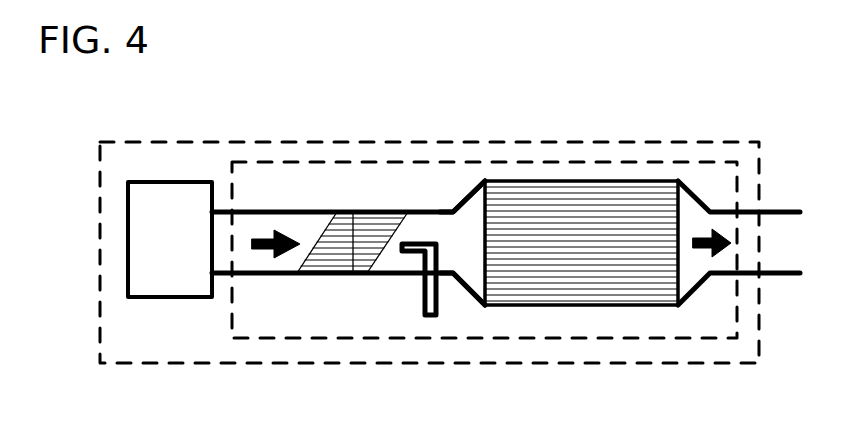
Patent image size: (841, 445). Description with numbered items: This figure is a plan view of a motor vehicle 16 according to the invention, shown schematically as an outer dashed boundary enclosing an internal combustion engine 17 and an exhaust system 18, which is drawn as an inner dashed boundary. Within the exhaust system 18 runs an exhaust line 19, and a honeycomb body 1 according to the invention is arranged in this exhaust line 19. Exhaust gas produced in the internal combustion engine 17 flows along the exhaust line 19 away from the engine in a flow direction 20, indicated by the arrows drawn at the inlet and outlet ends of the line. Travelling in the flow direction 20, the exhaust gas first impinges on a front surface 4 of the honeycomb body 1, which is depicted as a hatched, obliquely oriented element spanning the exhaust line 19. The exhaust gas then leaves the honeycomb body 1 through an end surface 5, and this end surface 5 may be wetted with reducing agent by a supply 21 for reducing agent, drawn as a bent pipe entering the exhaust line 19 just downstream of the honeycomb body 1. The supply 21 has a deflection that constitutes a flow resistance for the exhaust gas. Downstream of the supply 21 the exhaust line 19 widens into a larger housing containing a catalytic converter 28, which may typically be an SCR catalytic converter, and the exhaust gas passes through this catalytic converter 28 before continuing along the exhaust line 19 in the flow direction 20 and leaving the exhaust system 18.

The honeycomb body 1 is at (357, 212).
The front surface 4 is at (337, 212).
The end surface 5 is at (382, 252).
The motor vehicle 16 is at (725, 142).
The internal combustion engine 17 is at (170, 182).
The exhaust system 18 is at (648, 162).
The exhaust line 19 is at (425, 212).
The flow direction 20 is at (263, 250).
The supply for reducing agent 21 is at (435, 317).
The catalytic converter 28 is at (560, 181).